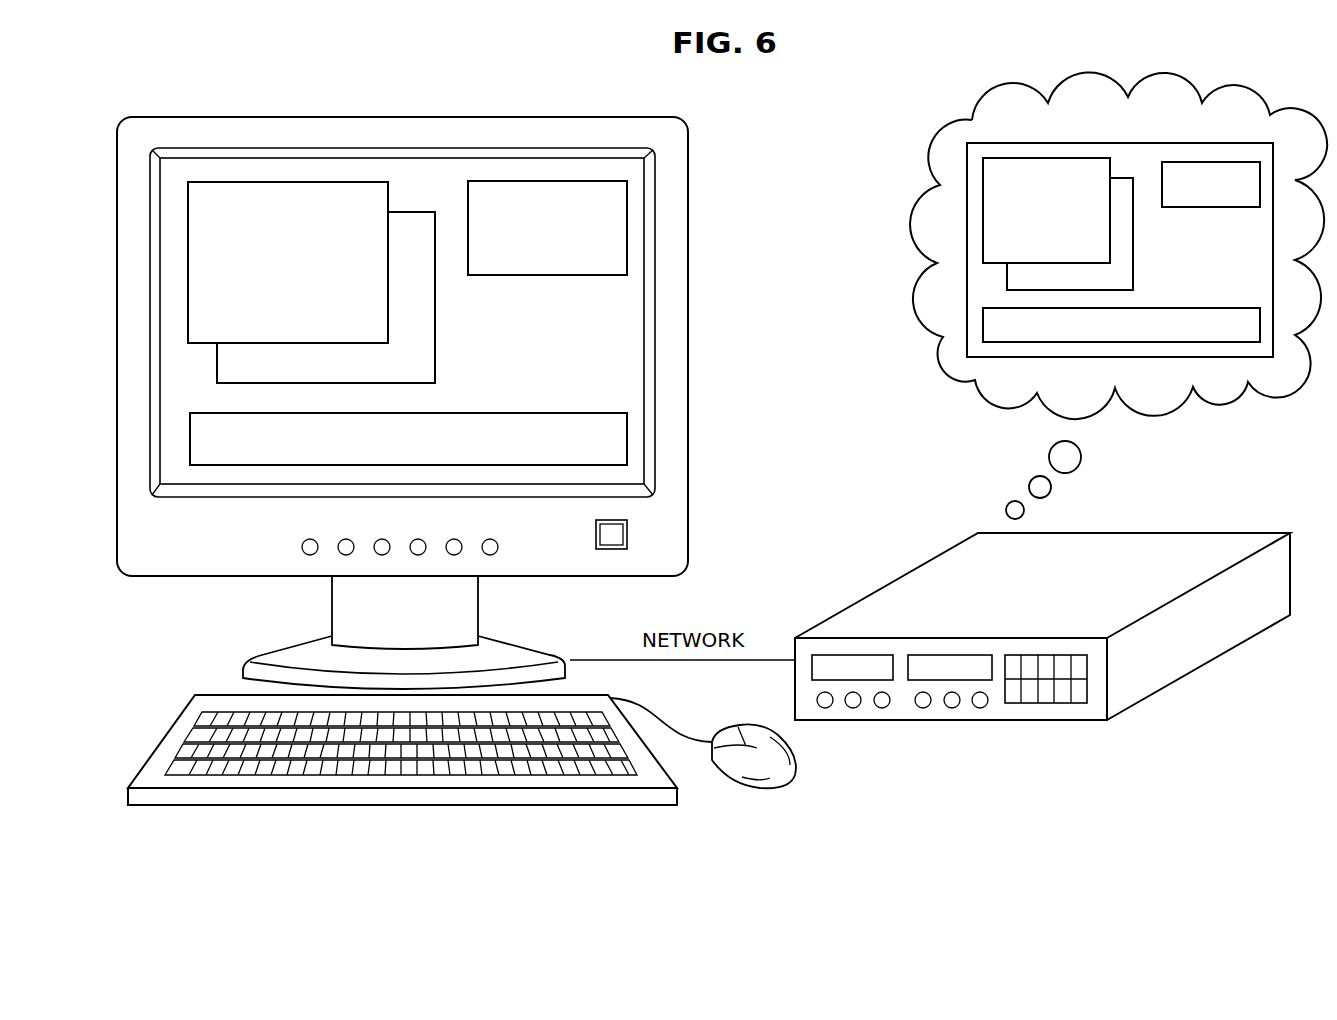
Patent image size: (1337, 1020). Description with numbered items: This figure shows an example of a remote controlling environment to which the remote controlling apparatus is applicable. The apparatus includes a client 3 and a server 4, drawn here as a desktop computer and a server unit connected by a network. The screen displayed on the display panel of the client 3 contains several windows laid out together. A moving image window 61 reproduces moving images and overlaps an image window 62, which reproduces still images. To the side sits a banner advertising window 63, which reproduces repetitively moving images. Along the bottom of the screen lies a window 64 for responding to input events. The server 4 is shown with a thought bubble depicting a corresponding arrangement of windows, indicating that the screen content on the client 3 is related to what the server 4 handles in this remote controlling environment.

The client 3 is at (690, 183).
The server 4 is at (1138, 533).
The moving image window 61 is at (288, 262).
The image window 62 is at (326, 297).
The banner advertising window 63 is at (547, 228).
The window for responding to input events 64 is at (408, 439).